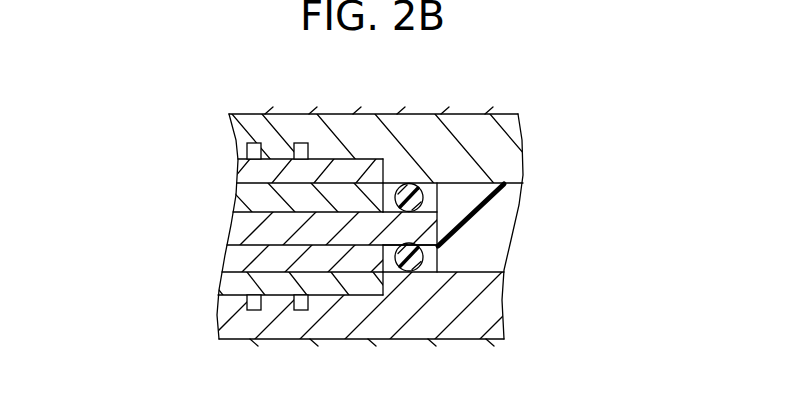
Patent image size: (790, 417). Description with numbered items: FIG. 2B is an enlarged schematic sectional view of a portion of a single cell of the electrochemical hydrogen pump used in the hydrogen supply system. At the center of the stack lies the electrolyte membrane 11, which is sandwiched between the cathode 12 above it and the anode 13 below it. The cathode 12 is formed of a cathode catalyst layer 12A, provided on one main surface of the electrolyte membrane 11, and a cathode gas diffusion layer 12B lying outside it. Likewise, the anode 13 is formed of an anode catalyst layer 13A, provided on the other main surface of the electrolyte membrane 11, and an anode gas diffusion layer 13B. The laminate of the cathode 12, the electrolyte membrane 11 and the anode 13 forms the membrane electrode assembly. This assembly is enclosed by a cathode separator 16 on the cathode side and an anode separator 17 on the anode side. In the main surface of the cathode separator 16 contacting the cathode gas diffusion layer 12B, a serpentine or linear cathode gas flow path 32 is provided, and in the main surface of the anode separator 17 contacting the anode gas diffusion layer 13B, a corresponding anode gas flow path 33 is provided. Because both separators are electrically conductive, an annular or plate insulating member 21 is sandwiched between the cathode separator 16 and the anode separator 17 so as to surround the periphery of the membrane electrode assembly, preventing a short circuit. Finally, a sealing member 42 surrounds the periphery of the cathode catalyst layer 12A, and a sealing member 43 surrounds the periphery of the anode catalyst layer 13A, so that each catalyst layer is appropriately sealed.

The electrolyte membrane 11 is at (248, 221).
The cathode 12 is at (216, 176).
The cathode catalyst layer 12A is at (250, 200).
The cathode gas diffusion layer 12B is at (248, 170).
The anode 13 is at (224, 284).
The anode catalyst layer 13A is at (238, 256).
The anode gas diffusion layer 13B is at (236, 282).
The cathode separator 16 is at (510, 150).
The anode separator 17 is at (495, 297).
The insulating member 21 is at (495, 222).
The cathode gas flow path 32 is at (255, 150).
The anode gas flow path 33 is at (247, 303).
The sealing member 42 is at (412, 184).
The sealing member 43 is at (403, 272).